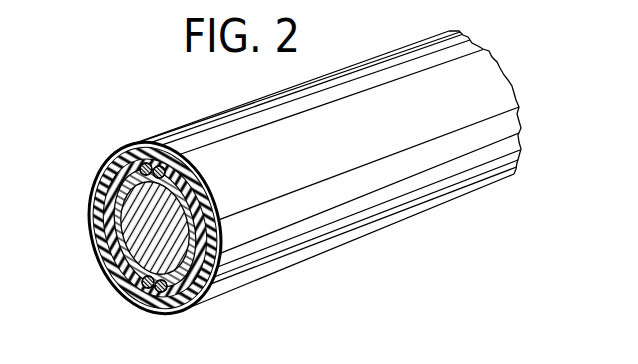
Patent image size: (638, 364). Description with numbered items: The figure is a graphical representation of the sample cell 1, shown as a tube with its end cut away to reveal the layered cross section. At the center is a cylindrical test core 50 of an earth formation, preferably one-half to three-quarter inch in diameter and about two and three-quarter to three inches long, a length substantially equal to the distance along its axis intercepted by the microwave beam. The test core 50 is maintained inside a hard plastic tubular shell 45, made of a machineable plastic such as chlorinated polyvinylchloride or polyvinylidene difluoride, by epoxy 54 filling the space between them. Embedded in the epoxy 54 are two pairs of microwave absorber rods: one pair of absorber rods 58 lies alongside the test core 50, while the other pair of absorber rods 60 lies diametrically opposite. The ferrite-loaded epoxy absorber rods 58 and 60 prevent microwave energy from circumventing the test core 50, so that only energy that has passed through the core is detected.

The sample cell 1 is at (485, 190).
The tubular shell 45 is at (91, 221).
The test core 50 is at (137, 251).
The epoxy 54 is at (202, 288).
The absorber rods 58 is at (153, 294).
The absorber rods 60 is at (158, 166).